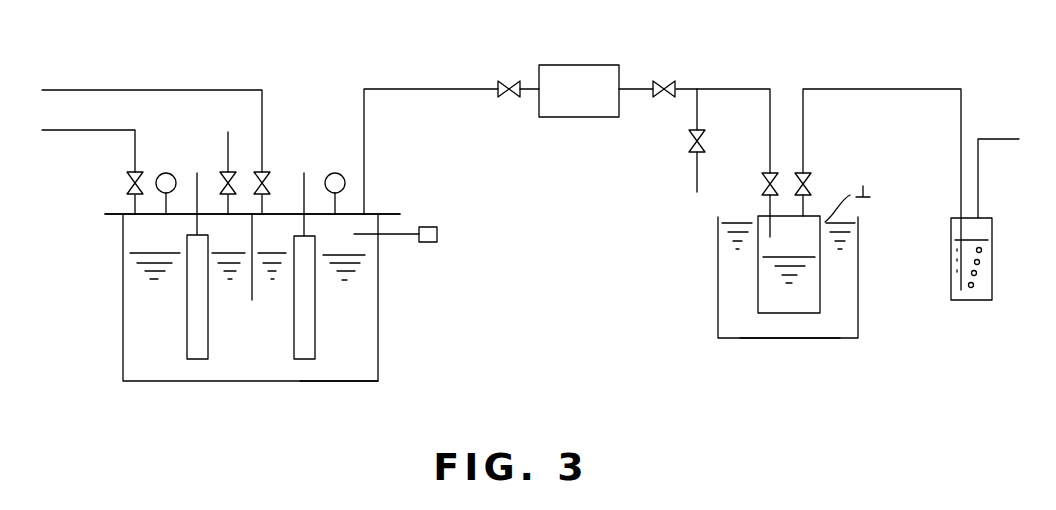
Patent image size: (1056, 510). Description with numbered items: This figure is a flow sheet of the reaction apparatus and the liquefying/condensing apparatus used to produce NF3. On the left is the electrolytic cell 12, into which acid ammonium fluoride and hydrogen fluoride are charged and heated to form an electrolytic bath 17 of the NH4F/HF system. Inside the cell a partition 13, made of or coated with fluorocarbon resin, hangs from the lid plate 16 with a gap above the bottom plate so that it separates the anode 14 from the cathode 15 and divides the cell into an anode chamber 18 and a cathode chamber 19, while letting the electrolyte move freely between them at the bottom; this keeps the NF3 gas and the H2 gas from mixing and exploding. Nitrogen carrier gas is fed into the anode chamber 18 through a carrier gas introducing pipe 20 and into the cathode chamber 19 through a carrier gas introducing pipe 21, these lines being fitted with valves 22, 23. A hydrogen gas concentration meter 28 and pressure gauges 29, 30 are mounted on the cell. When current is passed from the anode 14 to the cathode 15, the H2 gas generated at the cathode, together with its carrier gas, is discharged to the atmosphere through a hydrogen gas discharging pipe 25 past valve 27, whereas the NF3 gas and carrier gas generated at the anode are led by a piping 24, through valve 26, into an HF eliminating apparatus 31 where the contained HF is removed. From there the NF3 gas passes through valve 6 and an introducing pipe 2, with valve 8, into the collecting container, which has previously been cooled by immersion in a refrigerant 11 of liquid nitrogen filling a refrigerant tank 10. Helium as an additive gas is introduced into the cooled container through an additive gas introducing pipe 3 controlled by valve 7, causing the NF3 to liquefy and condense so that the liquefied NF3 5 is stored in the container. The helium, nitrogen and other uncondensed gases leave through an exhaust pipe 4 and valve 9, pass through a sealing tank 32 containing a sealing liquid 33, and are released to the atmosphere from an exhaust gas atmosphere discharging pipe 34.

The introducing pipe 2 is at (630, 88).
The additive gas introducing pipe 3 is at (700, 160).
The exhaust pipe 4 is at (845, 92).
The liquefied NF3 5 is at (765, 275).
The valve 6 is at (658, 95).
The valve 7 is at (690, 138).
The valve 8 is at (763, 178).
The valve 9 is at (812, 178).
The refrigerant tank 10 is at (718, 245).
The refrigerant 11 is at (785, 332).
The electrolytic cell 12 is at (380, 315).
The partition 13 is at (250, 278).
The electrode (anode) 14 is at (291, 300).
The electrode (cathode) 15 is at (185, 290).
The lid plate 16 is at (126, 213).
The electrolytic bath 17 is at (325, 375).
The anode chamber 18 is at (367, 243).
The cathode chamber 19 is at (145, 230).
The carrier gas introducing pipe 20 is at (122, 90).
The carrier gas introducing pipe 21 is at (60, 132).
The valve 22 is at (268, 190).
The valve 23 is at (140, 177).
The piping 24 is at (365, 112).
The hydrogen gas discharging pipe 25 is at (228, 150).
The valve 26 is at (510, 82).
The valve 27 is at (235, 187).
The hydrogen gas concentration meter 28 is at (428, 243).
The pressure gauge 29 is at (329, 172).
The pressure gauge 30 is at (169, 174).
The HF eliminating apparatus 31 is at (572, 118).
The sealing tank 32 is at (950, 235).
The sealing liquid 33 is at (970, 298).
The exhaust gas atmosphere discharging pipe 34 is at (978, 198).